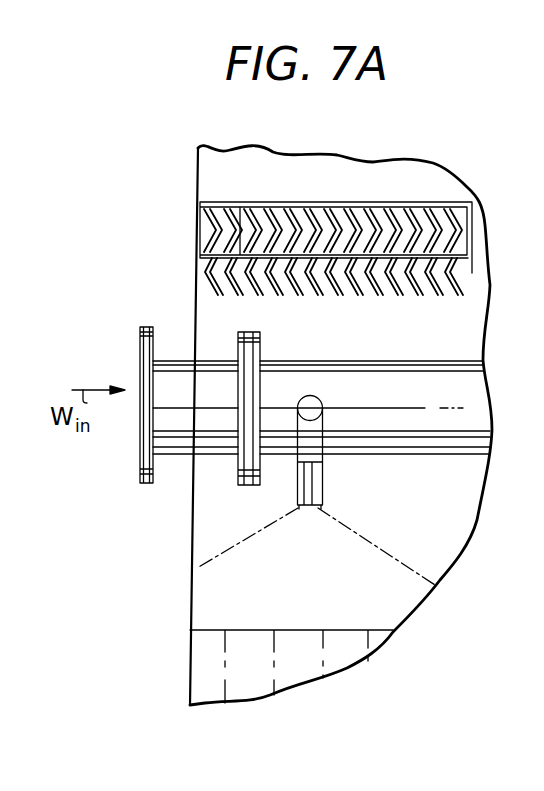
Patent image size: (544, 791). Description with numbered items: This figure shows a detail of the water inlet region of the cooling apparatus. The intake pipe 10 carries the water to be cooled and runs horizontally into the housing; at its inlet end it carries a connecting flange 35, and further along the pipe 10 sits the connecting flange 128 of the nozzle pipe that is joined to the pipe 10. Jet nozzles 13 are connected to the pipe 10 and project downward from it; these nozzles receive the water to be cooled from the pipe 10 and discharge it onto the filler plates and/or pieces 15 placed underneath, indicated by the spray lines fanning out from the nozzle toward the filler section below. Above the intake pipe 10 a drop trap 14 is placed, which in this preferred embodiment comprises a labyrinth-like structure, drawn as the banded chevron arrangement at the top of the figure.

The intake pipe 10 is at (172, 458).
The jet nozzles 13 is at (325, 490).
The heat exchanger 14 is at (452, 245).
The filler plates and/or pieces 15 is at (225, 652).
The inlet flange 35 is at (148, 326).
The connecting flange of the nozzle pipe 128 is at (260, 366).